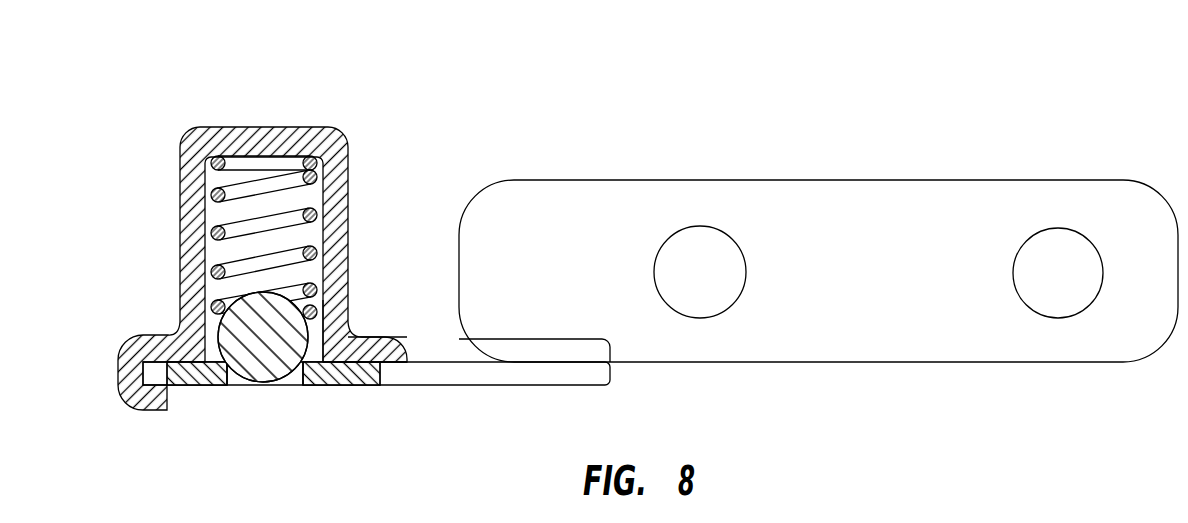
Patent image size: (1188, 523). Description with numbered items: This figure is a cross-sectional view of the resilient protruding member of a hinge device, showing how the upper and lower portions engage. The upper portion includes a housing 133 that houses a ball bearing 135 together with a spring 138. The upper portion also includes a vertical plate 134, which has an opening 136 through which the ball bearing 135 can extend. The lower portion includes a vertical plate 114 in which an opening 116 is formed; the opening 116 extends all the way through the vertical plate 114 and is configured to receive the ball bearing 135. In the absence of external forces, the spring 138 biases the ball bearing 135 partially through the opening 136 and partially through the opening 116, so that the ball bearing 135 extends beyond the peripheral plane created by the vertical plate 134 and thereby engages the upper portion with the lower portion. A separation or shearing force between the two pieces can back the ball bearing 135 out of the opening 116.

The vertical plate 114 is at (370, 384).
The opening 116 is at (287, 392).
The housing 133 is at (225, 127).
The vertical plate 134 is at (377, 339).
The ball bearing 135 is at (251, 378).
The opening 136 is at (317, 348).
The spring 138 is at (274, 185).